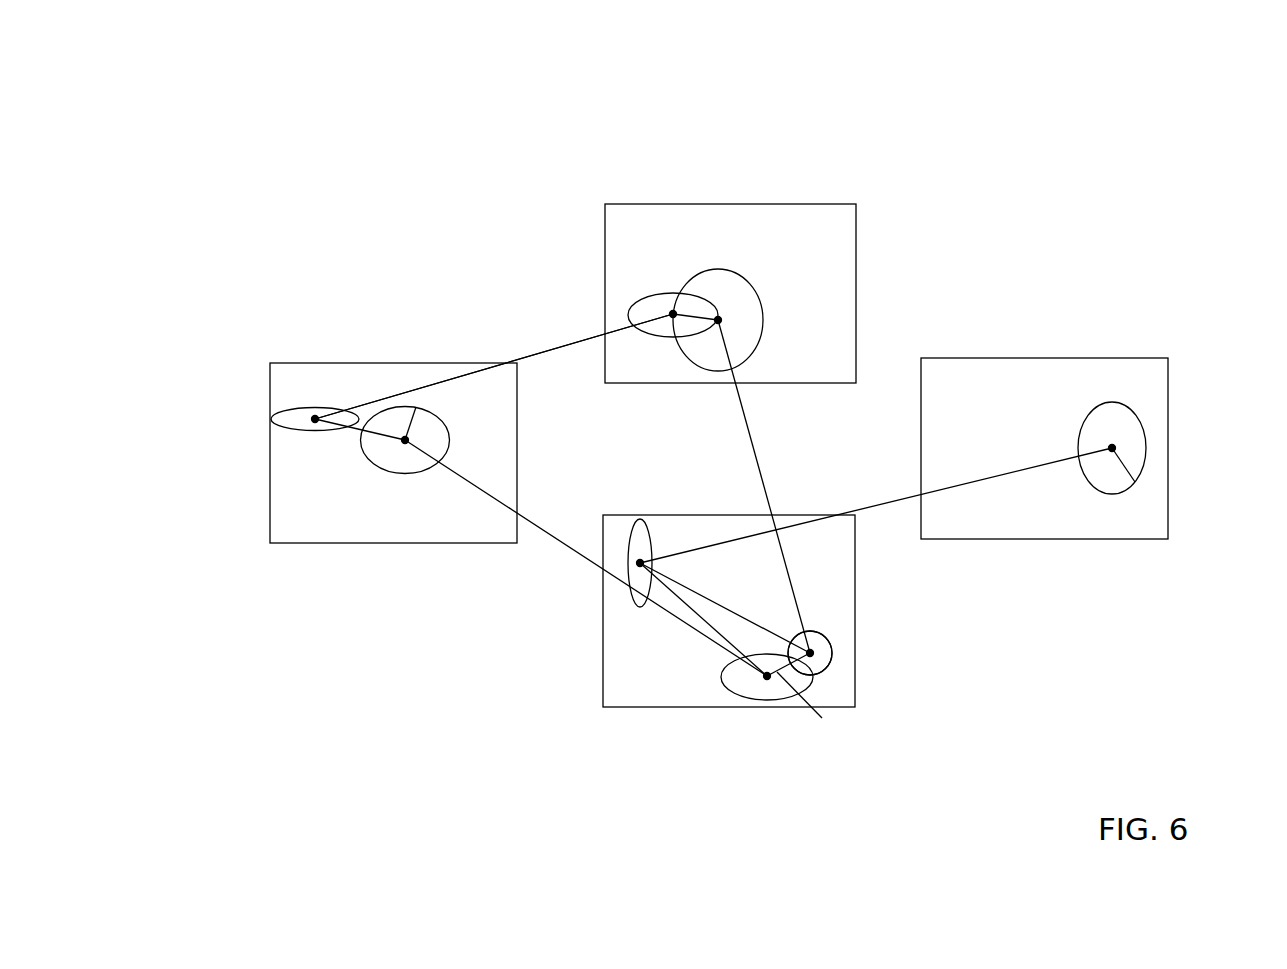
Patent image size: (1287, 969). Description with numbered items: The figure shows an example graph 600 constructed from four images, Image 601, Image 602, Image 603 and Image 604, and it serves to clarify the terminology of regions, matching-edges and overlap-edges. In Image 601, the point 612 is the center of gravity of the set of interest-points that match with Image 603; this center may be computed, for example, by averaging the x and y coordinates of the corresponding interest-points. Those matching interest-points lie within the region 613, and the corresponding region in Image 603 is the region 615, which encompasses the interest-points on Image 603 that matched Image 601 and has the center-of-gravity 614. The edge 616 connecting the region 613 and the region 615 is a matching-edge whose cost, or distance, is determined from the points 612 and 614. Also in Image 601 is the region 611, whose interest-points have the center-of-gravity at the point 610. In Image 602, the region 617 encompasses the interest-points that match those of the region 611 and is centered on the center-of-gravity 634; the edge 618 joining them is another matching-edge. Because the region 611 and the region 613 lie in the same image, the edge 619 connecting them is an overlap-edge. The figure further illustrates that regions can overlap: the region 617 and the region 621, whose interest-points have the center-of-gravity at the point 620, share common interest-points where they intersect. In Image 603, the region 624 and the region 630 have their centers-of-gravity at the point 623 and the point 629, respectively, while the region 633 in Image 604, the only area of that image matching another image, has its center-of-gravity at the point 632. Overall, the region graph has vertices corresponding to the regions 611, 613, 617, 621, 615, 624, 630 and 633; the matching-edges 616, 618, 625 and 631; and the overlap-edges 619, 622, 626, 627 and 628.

The graph 600 is at (234, 83).
The Image 601 is at (270, 530).
The Image 602 is at (856, 224).
The Image 603 is at (603, 647).
The Image 604 is at (1168, 378).
The point 610 is at (315, 419).
The region 611 is at (292, 408).
The point 612 is at (416, 407).
The region 613 is at (393, 395).
The center-of-gravity 614 is at (767, 676).
The region 615 is at (727, 693).
The edge 616 is at (590, 562).
The region 617 is at (633, 300).
The edge 618 is at (537, 350).
The edge 619 is at (358, 426).
The point 620 is at (718, 320).
The region 621 is at (790, 282).
The overlap-edge 622 is at (688, 313).
The point 623 is at (815, 632).
The region 624 is at (826, 668).
The matching-edge 625 is at (750, 438).
The overlap-edge 626 is at (822, 718).
The overlap-edge 627 is at (712, 602).
The overlap-edge 628 is at (682, 604).
The point 629 is at (630, 549).
The region 630 is at (652, 536).
The matching-edge 631 is at (900, 500).
The point 632 is at (1135, 482).
The region 633 is at (1145, 432).
The center-of-gravity 634 is at (673, 313).